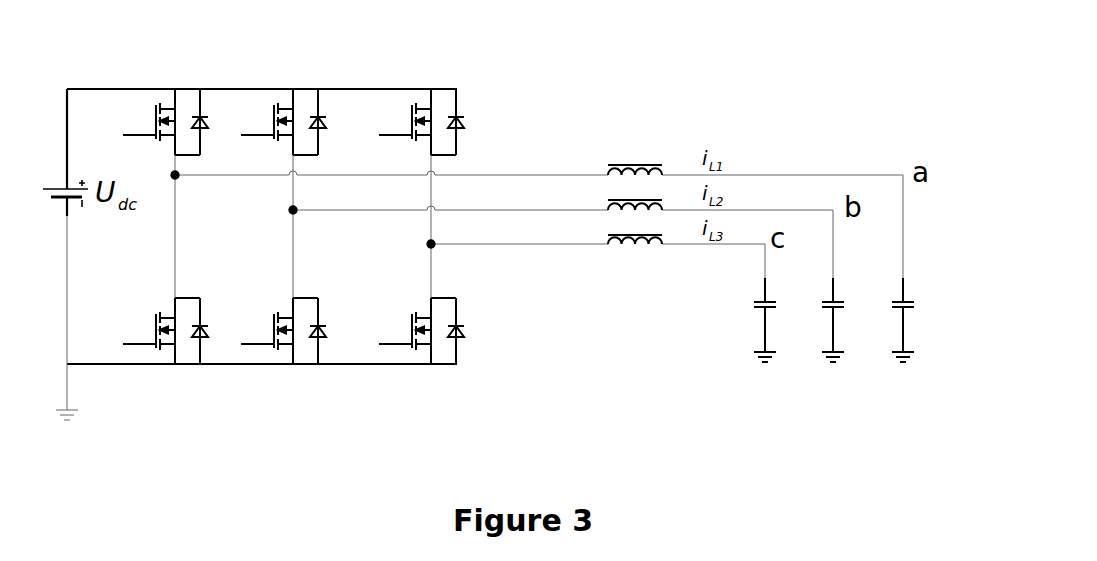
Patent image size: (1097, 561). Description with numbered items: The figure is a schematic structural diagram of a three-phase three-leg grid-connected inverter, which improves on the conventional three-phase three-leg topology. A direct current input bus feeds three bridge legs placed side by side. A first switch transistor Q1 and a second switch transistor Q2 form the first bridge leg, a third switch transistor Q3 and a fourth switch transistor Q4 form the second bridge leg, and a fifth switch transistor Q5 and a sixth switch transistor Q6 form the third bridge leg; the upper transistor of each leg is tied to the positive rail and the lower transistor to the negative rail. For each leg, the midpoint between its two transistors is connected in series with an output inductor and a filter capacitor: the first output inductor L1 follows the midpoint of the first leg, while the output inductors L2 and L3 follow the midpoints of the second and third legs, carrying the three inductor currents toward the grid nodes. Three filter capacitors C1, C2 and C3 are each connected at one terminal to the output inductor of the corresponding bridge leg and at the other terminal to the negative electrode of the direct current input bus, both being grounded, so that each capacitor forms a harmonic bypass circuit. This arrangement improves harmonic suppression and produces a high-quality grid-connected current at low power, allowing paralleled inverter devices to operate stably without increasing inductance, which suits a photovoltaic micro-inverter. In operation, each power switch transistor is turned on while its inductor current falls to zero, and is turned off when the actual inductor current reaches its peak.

The first switch transistor Q1 is at (163, 122).
The second switch transistor Q2 is at (163, 331).
The third switch transistor Q3 is at (281, 122).
The fourth switch transistor Q4 is at (281, 331).
The fifth switch transistor Q5 is at (419, 122).
The sixth switch transistor Q6 is at (419, 331).
The first output inductor L1 is at (635, 159).
The output inductor L2 is at (635, 194).
The output inductor L3 is at (635, 228).
The filter capacitor C1 is at (918, 320).
The filter capacitor C2 is at (848, 320).
The filter capacitor C3 is at (780, 320).